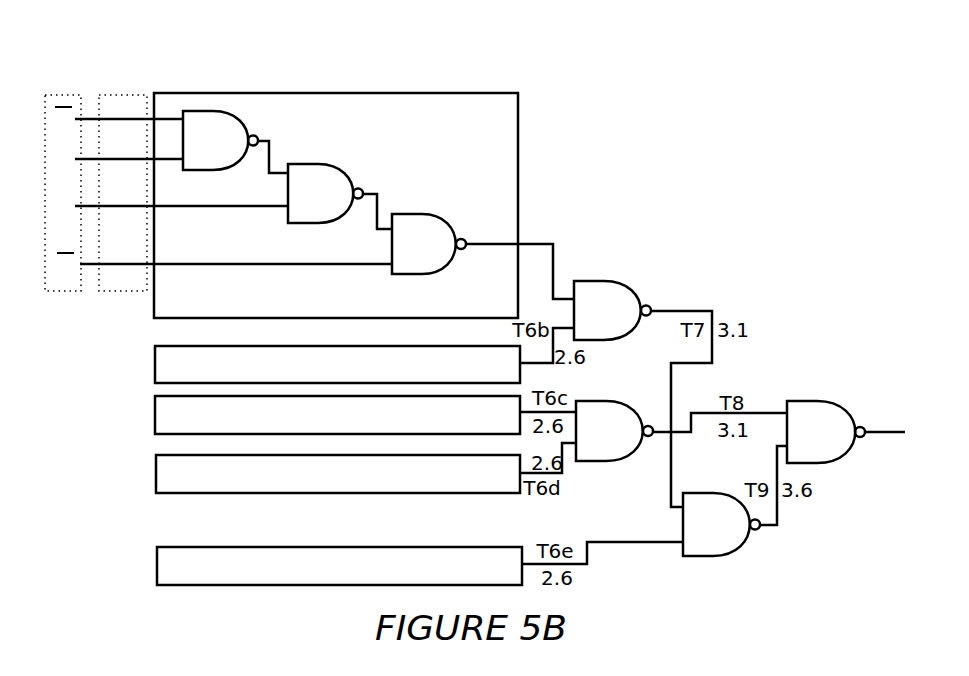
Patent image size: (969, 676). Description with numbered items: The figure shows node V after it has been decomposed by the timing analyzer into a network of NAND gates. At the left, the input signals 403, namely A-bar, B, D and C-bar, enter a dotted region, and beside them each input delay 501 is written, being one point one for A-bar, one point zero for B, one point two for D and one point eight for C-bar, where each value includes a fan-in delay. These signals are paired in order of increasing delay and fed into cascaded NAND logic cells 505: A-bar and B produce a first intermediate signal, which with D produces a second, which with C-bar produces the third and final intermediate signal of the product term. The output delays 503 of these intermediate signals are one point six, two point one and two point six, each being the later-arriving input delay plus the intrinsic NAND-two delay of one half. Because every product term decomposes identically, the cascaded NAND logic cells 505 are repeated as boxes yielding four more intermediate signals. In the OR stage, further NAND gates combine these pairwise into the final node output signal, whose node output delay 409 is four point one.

The input signals 403 is at (63, 93).
The input delay 501 is at (124, 93).
The output delay 503 is at (495, 218).
The cascaded NAND logic cells 505 is at (474, 130).
The node output delay 409 is at (880, 403).